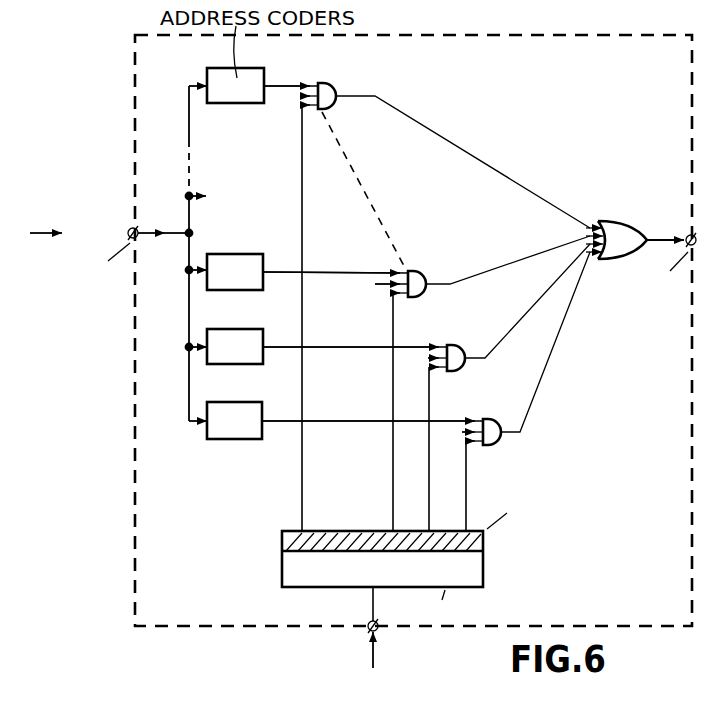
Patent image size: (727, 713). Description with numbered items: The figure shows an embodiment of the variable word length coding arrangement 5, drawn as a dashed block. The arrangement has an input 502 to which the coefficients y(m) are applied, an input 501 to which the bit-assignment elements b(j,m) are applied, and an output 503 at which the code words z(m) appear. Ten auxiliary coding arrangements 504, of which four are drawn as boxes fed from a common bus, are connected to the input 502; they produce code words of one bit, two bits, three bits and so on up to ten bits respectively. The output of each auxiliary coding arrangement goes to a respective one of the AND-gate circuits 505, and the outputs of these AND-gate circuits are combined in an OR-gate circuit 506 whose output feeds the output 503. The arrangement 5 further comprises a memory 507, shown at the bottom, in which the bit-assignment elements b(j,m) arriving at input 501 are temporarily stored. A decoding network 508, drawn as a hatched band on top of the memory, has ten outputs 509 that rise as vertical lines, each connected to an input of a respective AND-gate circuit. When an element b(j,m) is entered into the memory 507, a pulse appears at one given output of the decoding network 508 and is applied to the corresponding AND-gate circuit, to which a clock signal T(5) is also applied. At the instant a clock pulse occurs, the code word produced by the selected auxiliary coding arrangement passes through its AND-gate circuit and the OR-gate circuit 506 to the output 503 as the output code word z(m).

The variable word length coding arrangement 5 is at (430, 36).
The input 501 is at (369, 635).
The input 502 is at (128, 236).
The output 503 is at (696, 236).
The auxiliary coding arrangements 504 is at (244, 269).
The AND-gate circuits 505 is at (426, 254).
The OR-gate circuit 506 is at (623, 219).
The memory 507 is at (484, 573).
The decoding network 508 is at (474, 544).
The outputs of the decoding network 509 is at (401, 318).